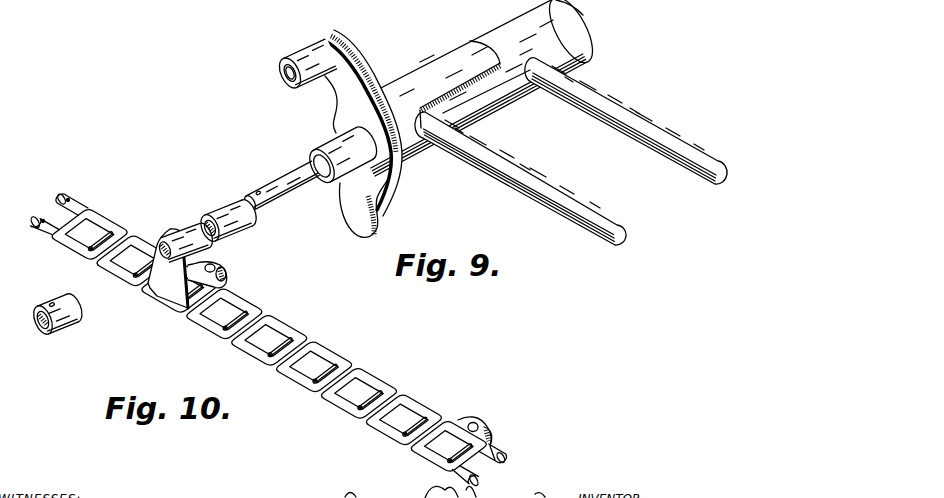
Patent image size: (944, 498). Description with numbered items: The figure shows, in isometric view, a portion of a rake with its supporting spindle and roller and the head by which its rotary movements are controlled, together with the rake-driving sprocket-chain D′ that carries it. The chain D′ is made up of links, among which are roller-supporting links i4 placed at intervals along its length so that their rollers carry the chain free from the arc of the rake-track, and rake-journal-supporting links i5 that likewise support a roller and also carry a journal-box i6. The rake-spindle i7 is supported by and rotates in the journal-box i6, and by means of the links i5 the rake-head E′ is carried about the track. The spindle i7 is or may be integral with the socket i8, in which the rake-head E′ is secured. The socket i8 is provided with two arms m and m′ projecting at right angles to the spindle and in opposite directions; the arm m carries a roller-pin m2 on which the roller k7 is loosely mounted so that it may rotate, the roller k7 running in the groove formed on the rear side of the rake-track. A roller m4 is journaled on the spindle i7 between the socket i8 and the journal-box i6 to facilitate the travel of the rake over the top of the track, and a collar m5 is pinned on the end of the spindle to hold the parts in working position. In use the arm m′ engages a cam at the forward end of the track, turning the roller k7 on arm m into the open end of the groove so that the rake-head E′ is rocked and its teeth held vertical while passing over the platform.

In FIG. 9, the rake-head roller k7 is at (303, 59).
In FIG. 9, the roller-pin m2 is at (284, 73).
In FIG. 9, the arm m is at (363, 123).
In FIG. 9, the arm m′ is at (349, 180).
In FIG. 9, the socket i8 is at (475, 84).
In FIG. 9, the rake-head E′ is at (534, 46).
In FIG. 9, the rake-spindle i7 is at (291, 198).
In FIG. 10, the rake-driving sprocket-chain D′ is at (267, 340).
In FIG. 10, the roller-supporting links i4 is at (470, 421).
In FIG. 10, the rake-journal-supporting links i5 is at (187, 268).
In FIG. 10, the journal-box i6 is at (180, 242).
In FIG. 10, the roller m4 is at (222, 212).
In FIG. 10, the collar m5 is at (62, 330).